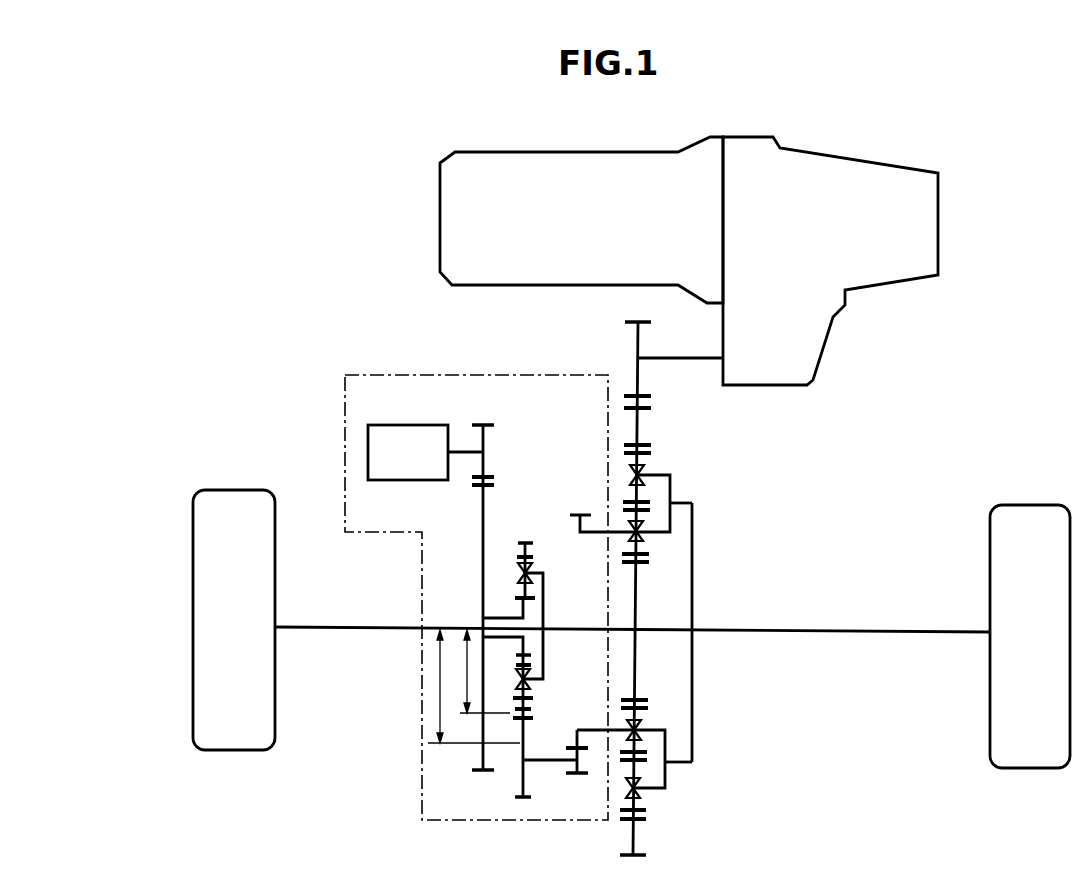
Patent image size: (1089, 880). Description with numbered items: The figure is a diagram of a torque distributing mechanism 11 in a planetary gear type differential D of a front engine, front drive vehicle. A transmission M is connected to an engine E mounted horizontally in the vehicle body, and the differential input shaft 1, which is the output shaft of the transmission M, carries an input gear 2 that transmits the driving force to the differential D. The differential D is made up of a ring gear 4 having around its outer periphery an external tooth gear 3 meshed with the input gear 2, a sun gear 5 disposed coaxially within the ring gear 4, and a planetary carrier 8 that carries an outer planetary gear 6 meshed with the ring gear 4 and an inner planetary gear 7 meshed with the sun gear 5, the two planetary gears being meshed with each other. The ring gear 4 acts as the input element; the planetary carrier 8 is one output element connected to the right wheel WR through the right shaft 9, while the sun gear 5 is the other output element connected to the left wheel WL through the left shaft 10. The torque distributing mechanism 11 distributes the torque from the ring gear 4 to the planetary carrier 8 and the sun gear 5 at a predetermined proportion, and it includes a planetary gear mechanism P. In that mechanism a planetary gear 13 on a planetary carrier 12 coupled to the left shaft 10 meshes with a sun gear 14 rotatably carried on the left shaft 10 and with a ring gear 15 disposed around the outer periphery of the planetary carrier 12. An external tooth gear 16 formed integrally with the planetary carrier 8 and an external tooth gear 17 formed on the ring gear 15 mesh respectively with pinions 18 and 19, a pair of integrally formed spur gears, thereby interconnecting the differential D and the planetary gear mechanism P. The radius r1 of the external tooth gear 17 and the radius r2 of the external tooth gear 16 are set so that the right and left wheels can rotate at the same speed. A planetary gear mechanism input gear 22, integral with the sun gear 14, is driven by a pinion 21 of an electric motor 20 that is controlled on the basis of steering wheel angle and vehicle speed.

The differential input shaft 1 is at (684, 360).
The input gear 2 is at (651, 396).
The external tooth gear 3 is at (651, 408).
The ring gear 4 is at (651, 446).
The sun gear 5 is at (640, 568).
The outer planetary gear 6 is at (651, 453).
The inner planetary gear 7 is at (650, 555).
The planetary carrier 8 is at (694, 506).
The right shaft 9 is at (853, 632).
The left shaft 10 is at (375, 627).
The torque distributing mechanism 11 is at (420, 728).
The planetary carrier 12 is at (544, 600).
The planetary gear 13 is at (534, 557).
The sun gear 14 is at (516, 598).
The ring gear 15 is at (514, 698).
The external tooth gear 16 is at (566, 748).
The external tooth gear 17 is at (533, 710).
The pinion 18 is at (572, 780).
The pinion 19 is at (518, 797).
The electric motor 20 is at (417, 425).
The pinion 21 is at (493, 477).
The planetary gear mechanism input gear 22 is at (494, 485).
The engine E is at (546, 285).
The transmission M is at (870, 277).
The differential D is at (708, 572).
The planetary gear mechanism P is at (477, 603).
The left wheel WL is at (226, 490).
The right wheel WR is at (1028, 505).
The radius of external tooth gear 17 r1 is at (485, 671).
The radius of external tooth gear 16 r2 is at (474, 686).